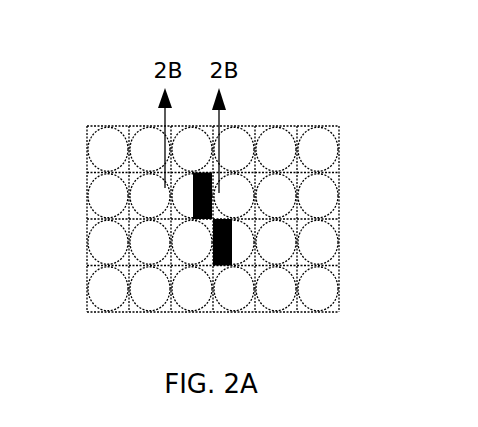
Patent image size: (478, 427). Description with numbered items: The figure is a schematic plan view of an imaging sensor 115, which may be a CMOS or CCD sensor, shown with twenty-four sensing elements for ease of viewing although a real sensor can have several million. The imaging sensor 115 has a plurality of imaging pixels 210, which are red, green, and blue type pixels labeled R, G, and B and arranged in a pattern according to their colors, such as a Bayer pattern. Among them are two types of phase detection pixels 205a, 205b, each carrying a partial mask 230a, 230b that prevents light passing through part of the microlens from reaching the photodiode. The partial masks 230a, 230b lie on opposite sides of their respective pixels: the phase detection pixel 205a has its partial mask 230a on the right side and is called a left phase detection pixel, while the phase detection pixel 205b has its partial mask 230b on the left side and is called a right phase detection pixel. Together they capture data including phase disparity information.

The imaging sensor 115 is at (278, 93).
The imaging pixels 210 is at (332, 182).
The phase detection pixel 205a is at (190, 212).
The phase detection pixel 205b is at (244, 266).
The partial mask 230a is at (201, 172).
The partial mask 230b is at (223, 265).